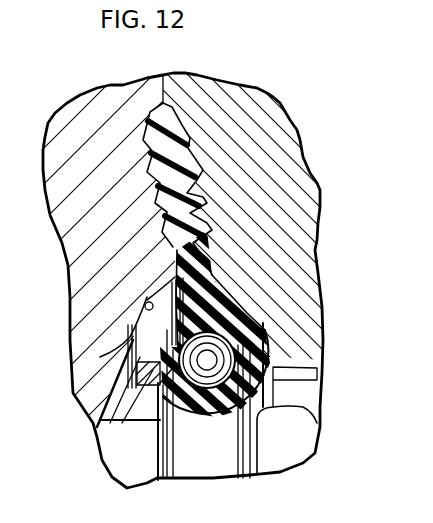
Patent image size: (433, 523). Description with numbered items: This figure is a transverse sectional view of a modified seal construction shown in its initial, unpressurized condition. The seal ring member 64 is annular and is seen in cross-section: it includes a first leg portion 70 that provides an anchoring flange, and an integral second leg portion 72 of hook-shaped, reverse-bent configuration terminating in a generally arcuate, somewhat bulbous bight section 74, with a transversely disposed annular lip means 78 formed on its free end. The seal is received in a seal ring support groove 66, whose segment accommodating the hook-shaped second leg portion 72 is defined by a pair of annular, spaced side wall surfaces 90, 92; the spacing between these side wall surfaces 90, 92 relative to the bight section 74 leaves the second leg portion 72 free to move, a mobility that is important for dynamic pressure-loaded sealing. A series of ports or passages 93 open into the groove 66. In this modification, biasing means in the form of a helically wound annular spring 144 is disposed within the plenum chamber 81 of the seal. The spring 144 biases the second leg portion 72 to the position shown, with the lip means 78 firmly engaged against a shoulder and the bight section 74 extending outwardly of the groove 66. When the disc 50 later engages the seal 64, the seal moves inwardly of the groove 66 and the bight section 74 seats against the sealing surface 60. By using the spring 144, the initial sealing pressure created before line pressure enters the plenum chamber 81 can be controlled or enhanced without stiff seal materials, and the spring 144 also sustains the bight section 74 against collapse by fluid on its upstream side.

The disc 50 is at (316, 417).
The sealing surface 60 is at (305, 390).
The seal ring member 64 is at (225, 305).
The seal ring support groove 66 is at (100, 357).
The first leg portion 70 is at (206, 157).
The second leg portion 72 is at (240, 323).
The bight section 74 is at (212, 422).
The lip means 78 is at (97, 430).
The plenum chamber 81 is at (155, 420).
The side wall surface 90 is at (147, 302).
The side wall surface 92 is at (277, 357).
The ports or passages 93 is at (95, 392).
The annular spring 144 is at (263, 357).